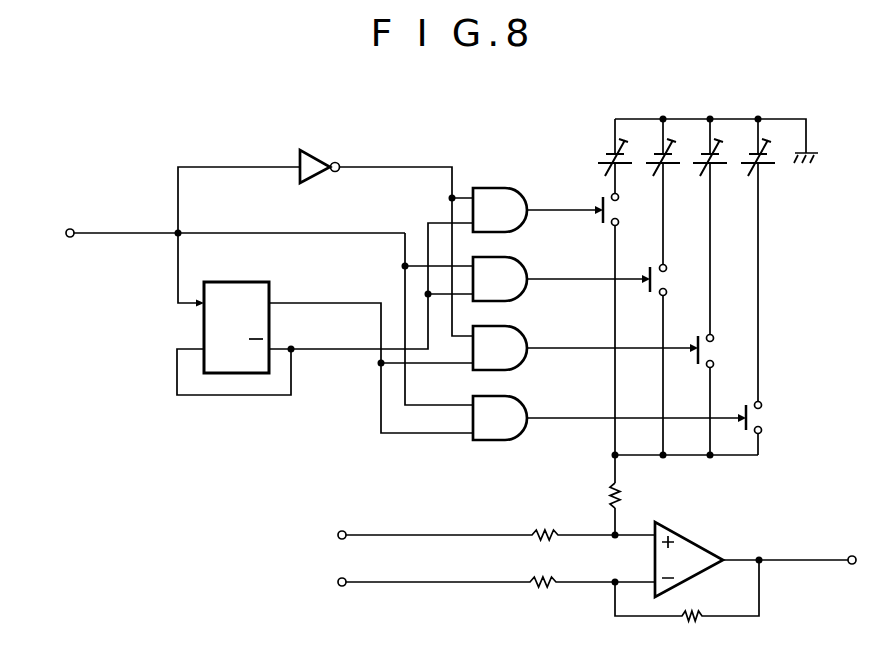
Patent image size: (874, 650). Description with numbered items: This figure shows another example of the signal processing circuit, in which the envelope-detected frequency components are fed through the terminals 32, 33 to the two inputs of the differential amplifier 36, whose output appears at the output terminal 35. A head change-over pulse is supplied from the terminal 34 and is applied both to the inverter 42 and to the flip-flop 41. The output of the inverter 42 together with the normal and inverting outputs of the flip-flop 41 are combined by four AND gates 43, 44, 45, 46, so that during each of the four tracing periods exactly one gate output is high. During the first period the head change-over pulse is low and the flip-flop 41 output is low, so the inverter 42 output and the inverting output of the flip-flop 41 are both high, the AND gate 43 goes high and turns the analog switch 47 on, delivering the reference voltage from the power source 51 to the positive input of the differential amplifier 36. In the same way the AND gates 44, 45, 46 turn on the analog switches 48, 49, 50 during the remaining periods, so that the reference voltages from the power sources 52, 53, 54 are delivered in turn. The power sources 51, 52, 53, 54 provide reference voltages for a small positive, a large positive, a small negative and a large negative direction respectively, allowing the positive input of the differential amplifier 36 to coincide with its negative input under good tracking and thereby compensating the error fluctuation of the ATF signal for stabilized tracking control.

The terminal 32 is at (337, 537).
The terminal 33 is at (337, 583).
The terminal 34 is at (71, 238).
The output terminal 35 is at (853, 554).
The differential amplifier 36 is at (700, 543).
The flip-flop 41 is at (203, 325).
The inverter 42 is at (318, 152).
The AND gate 43 is at (519, 190).
The AND gate 44 is at (520, 263).
The AND gate 45 is at (520, 333).
The AND gate 46 is at (520, 403).
The analog switch 47 is at (621, 208).
The analog switch 48 is at (668, 279).
The analog switch 49 is at (715, 350).
The analog switch 50 is at (762, 420).
The power source 51 is at (600, 160).
The power source 52 is at (676, 165).
The power source 53 is at (723, 165).
The power source 54 is at (771, 165).